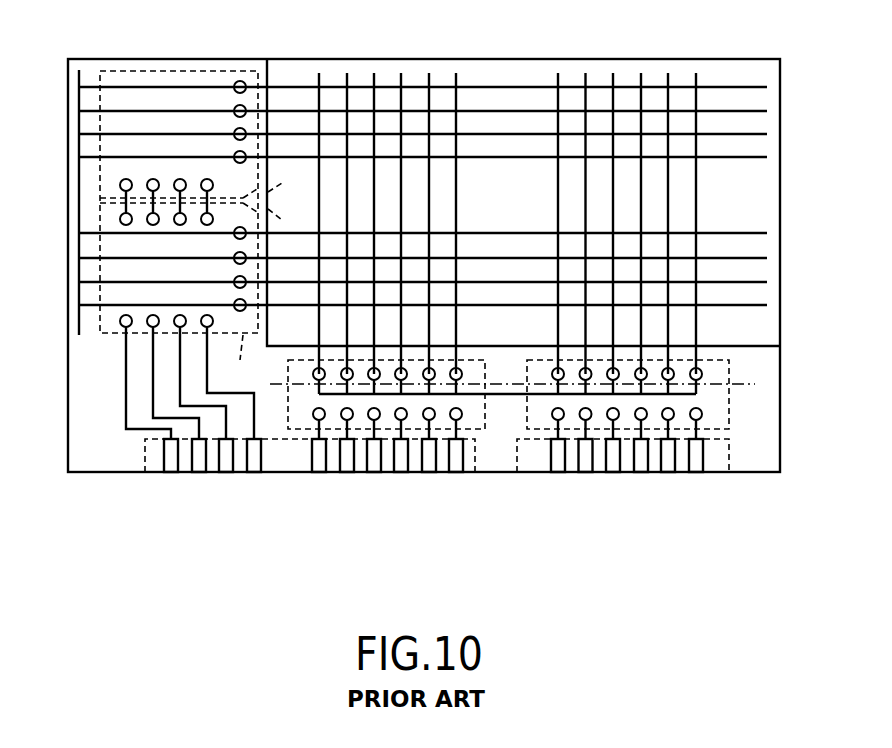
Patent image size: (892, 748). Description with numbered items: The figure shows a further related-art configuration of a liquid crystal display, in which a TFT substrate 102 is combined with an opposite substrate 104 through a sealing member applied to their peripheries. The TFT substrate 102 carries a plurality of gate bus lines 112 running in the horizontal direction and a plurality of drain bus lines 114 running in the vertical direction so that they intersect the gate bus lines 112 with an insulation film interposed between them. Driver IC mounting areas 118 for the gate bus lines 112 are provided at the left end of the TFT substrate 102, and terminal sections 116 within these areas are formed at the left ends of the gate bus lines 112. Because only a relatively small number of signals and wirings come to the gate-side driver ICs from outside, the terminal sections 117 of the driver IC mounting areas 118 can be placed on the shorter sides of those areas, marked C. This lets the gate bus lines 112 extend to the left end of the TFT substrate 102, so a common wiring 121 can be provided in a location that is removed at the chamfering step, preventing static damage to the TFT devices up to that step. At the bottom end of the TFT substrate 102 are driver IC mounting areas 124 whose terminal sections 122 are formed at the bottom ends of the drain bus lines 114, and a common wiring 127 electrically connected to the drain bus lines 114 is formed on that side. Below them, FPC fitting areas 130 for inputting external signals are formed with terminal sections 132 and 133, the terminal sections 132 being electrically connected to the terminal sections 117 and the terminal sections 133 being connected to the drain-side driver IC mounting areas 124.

The TFT substrate 102 is at (780, 392).
The opposite substrate 104 is at (780, 296).
The gate bus lines 112 is at (731, 158).
The drain bus lines 114 is at (458, 329).
The terminal sections 116 is at (240, 80).
The terminal sections 117 is at (120, 219).
The driver IC mounting areas 118 is at (174, 70).
The common wiring 121 is at (79, 297).
The terminal sections 122 is at (702, 373).
The driver IC mounting areas 124 is at (729, 416).
The common wiring 127 is at (505, 396).
The FPC fitting areas 130 is at (144, 455).
The terminal sections 132 is at (253, 473).
The terminal sections 133 is at (317, 473).